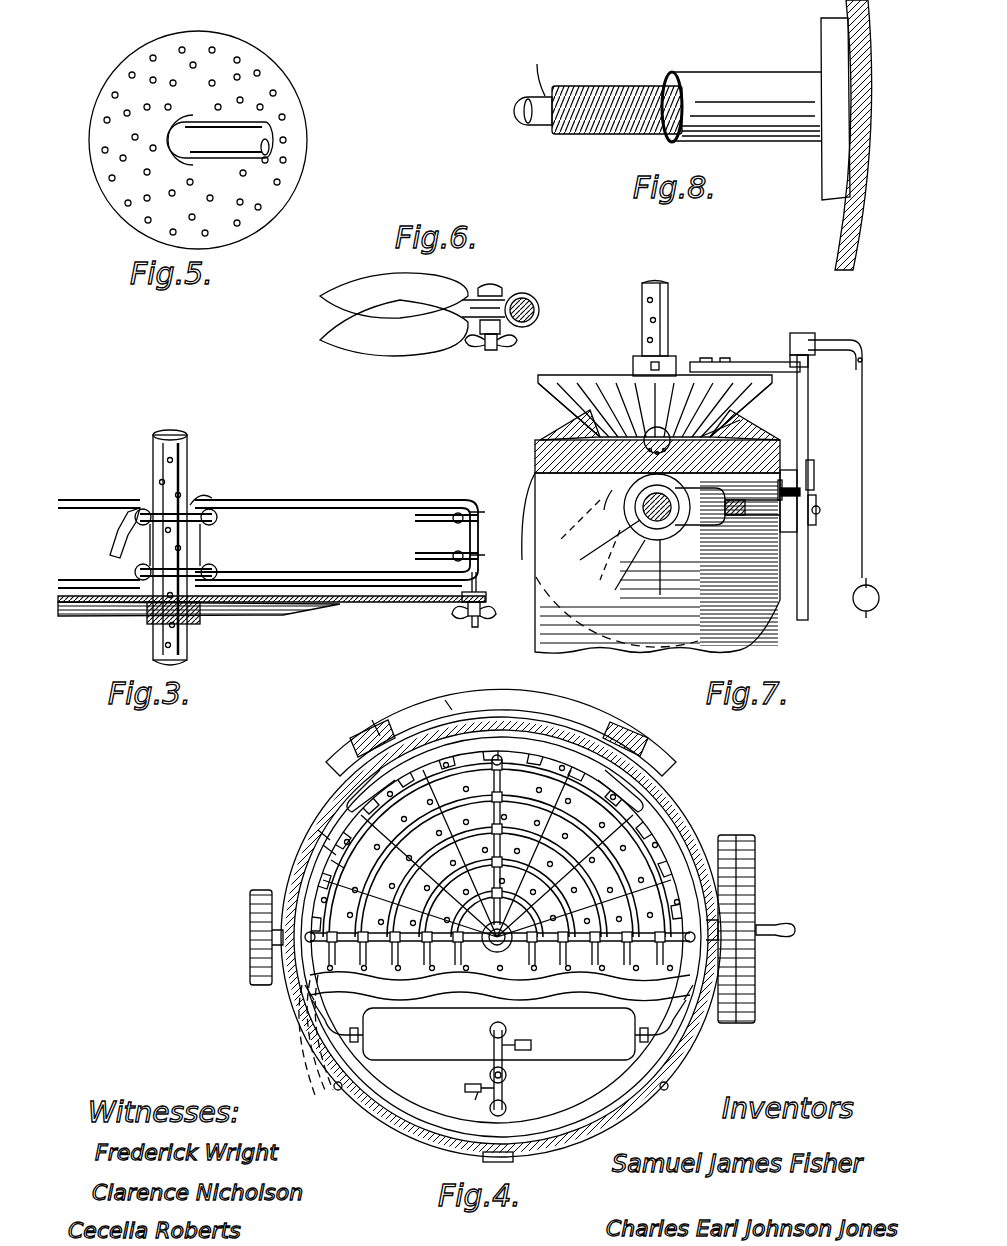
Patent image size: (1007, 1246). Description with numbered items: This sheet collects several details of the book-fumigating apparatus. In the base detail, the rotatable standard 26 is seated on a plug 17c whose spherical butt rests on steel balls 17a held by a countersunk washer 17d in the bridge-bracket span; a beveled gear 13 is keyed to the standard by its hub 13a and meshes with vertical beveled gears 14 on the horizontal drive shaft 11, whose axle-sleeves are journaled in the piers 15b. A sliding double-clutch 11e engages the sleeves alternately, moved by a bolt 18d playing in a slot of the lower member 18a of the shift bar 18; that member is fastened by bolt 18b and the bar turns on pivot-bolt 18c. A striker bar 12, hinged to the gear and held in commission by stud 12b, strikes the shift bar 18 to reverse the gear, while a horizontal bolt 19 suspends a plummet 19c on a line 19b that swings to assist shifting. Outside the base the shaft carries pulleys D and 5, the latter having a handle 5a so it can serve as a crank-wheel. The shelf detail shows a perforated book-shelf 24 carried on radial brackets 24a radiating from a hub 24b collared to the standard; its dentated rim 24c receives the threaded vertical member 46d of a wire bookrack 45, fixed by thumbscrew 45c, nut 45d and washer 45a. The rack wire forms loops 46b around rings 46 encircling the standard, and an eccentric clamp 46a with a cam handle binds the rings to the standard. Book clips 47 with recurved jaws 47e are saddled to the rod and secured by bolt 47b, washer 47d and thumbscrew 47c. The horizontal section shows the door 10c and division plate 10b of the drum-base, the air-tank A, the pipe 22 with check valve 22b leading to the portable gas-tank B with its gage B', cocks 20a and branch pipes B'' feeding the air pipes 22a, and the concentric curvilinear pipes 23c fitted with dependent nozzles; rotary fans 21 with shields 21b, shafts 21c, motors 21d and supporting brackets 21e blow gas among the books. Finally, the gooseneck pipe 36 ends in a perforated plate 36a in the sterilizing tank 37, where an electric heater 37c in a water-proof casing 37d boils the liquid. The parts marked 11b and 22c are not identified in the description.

In FIG. 5, the gooseneck pipe 36 is at (250, 136).
In FIG. 5, the perforated plate or drum 36a is at (273, 82).
In FIG. 8, the sterilizing tank 37 is at (848, 236).
In FIG. 8, the electric heater 37c is at (610, 118).
In FIG. 8, the water-proof casing 37d is at (733, 75).
In FIG. 6, the recurved jaws 47e is at (340, 313).
In FIG. 6, the vertical member 46d is at (540, 306).
In FIG. 3, the vertical member 46d is at (478, 530).
In FIG. 6, the bolt 47b is at (494, 290).
In FIG. 6, the washer 47d is at (480, 334).
In FIG. 6, the thumbscrew 47c is at (500, 350).
In FIG. 7, the piers 15b is at (785, 616).
In FIG. 7, the vertical beveled gears 14 is at (570, 430).
In FIG. 7, the beveled gear 13 is at (588, 374).
In FIG. 7, the hub 13a is at (648, 362).
In FIG. 7, the standard 26 is at (668, 320).
In FIG. 3, the standard 26 is at (155, 470).
In FIG. 7, the stud 12b is at (745, 362).
In FIG. 7, the striker bar 12 is at (808, 362).
In FIG. 7, the shift bar 18 is at (802, 333).
In FIG. 7, the bolt 19 is at (846, 342).
In FIG. 7, the line 19b is at (864, 430).
In FIG. 7, the bob or plummet 19c is at (866, 612).
In FIG. 7, the bolt 18b is at (812, 462).
In FIG. 7, the pivot-bolt 18c is at (805, 470).
In FIG. 7, the bolt 18d is at (816, 508).
In FIG. 7, the lower member 18a is at (797, 528).
In FIG. 7, the horizontal drive shaft 11 is at (628, 525).
In FIG. 7, the washer 17d is at (600, 505).
In FIG. 7, the steel balls 17a is at (608, 525).
In FIG. 7, the plug 17c is at (752, 420).
In FIG. 7, the sliding double-clutch 11e is at (640, 545).
In FIG. 7, the spoke 11b is at (657, 545).
In FIG. 3, the bookrack 45 is at (358, 500).
In FIG. 4, the bookrack 45 is at (410, 945).
In FIG. 3, the rings 46 is at (200, 510).
In FIG. 3, the wire loops 46b is at (215, 500).
In FIG. 3, the eccentric clamp 46a is at (112, 536).
In FIG. 3, the book clips 47 is at (425, 554).
In FIG. 3, the book-shelves 24 is at (320, 602).
In FIG. 4, the book-shelves 24 is at (340, 908).
In FIG. 3, the radial brackets 24a is at (258, 612).
In FIG. 3, the collar or hub 24b is at (160, 616).
In FIG. 3, the dentated rims 24c is at (486, 595).
In FIG. 4, the dentated rims 24c is at (322, 835).
In FIG. 3, the nut 45d is at (480, 585).
In FIG. 3, the washer 45a is at (468, 604).
In FIG. 3, the thumbscrew 45c is at (484, 617).
In FIG. 4, the door 10c is at (398, 1128).
In FIG. 4, the division plate 10b is at (472, 985).
In FIG. 4, the rotary fans 21 is at (333, 774).
In FIG. 4, the shields 21b is at (650, 790).
In FIG. 4, the fan shaft 21c is at (365, 730).
In FIG. 4, the motors 21d is at (372, 720).
In FIG. 4, the shelf or brackets 21e is at (445, 700).
In FIG. 4, the curvilinear extension pipes 23c is at (660, 848).
In FIG. 4, the pipe 22 is at (505, 1080).
In FIG. 4, the air pipes 22a is at (305, 985).
In FIG. 4, the check valve 22b is at (490, 1075).
In FIG. 4, the valve stem 22c is at (472, 1093).
In FIG. 4, the cocks 20a is at (366, 1032).
In FIG. 4, the portable gas-tank B is at (499, 1034).
In FIG. 4, the gage B' is at (528, 1028).
In FIG. 4, the branch pipes B'' is at (296, 1043).
In FIG. 4, the air-tank A is at (565, 1087).
In FIG. 4, the pulley D is at (252, 973).
In FIG. 4, the pulley 5 is at (745, 890).
In FIG. 4, the handle 5a is at (785, 925).